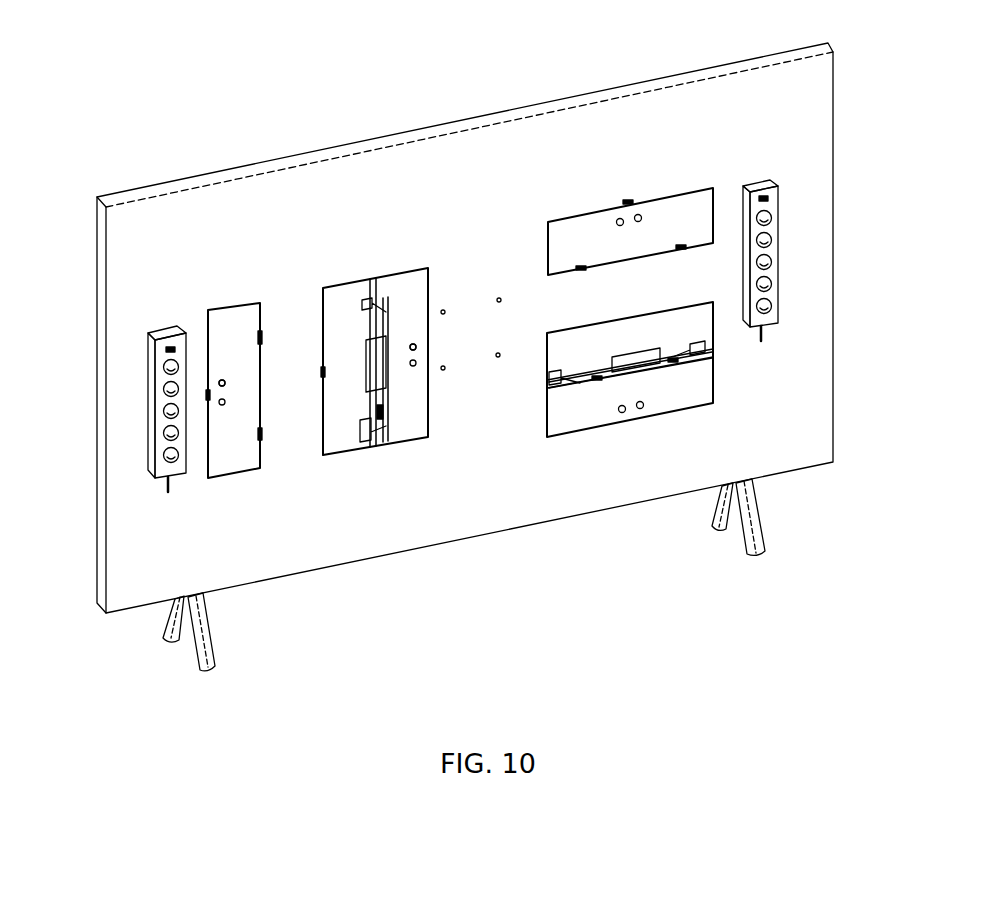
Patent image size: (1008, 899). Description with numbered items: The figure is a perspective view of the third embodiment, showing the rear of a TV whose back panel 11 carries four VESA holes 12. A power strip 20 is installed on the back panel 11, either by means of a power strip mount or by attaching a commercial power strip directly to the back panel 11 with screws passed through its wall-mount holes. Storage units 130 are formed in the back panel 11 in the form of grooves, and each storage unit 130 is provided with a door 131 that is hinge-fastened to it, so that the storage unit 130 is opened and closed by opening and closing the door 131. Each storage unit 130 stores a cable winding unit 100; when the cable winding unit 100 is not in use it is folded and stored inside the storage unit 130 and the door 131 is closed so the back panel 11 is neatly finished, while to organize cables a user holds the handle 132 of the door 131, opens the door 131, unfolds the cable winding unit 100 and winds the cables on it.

The back panel 11 is at (808, 394).
The VESA hole 12 is at (444, 371).
The power strip 20 is at (152, 407).
The cable winding unit 100 is at (405, 417).
The storage unit 130 is at (351, 318).
The door 131 is at (233, 323).
The handle 132 is at (220, 379).